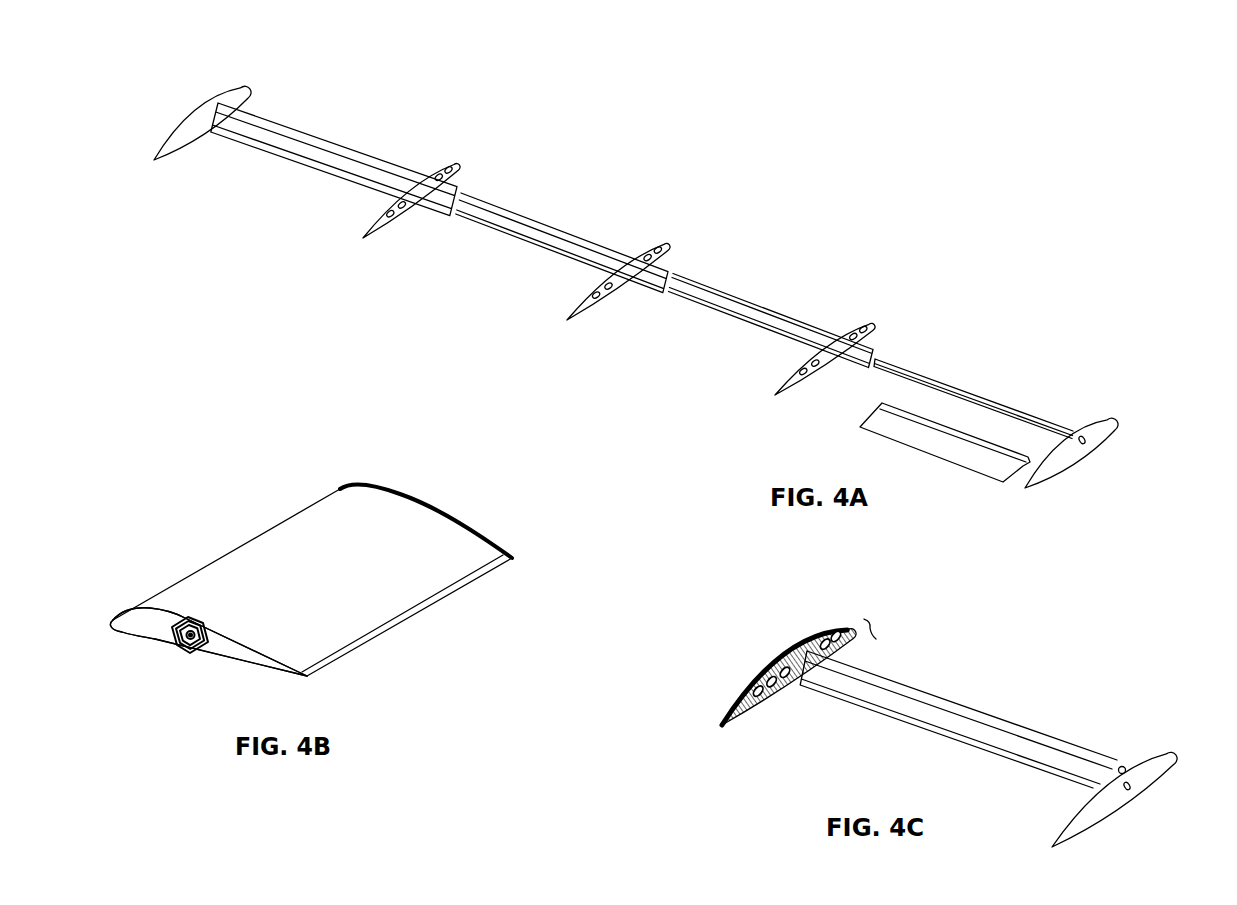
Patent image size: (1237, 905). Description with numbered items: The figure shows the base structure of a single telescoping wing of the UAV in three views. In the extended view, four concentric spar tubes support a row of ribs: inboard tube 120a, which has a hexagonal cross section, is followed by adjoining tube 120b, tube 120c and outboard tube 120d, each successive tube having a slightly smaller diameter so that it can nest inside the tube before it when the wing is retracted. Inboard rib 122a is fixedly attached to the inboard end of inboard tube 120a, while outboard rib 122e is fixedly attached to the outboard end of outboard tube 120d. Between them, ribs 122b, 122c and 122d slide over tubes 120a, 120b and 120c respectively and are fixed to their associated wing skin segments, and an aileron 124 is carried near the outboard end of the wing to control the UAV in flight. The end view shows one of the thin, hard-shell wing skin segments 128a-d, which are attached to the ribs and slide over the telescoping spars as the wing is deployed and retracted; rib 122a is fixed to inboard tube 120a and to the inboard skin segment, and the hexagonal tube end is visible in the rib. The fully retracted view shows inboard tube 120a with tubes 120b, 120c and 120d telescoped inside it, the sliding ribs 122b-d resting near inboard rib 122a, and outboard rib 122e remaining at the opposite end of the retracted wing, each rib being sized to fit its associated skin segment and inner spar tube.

In FIG. 4A, the inboard tube 120a is at (358, 160).
In FIG. 4C, the inboard tube 120a is at (968, 722).
In FIG. 4A, the adjoining tube 120b is at (563, 246).
In FIG. 4C, the adjoining tube 120b is at (1122, 767).
In FIG. 4A, the tube 120c is at (773, 322).
In FIG. 4A, the outboard tube 120d is at (985, 400).
In FIG. 4A, the inboard rib 122a is at (237, 86).
In FIG. 4B, the inboard rib 122a is at (155, 638).
In FIG. 4C, the inboard rib 122a is at (792, 676).
In FIG. 4A, the rib 122b is at (447, 166).
In FIG. 4A, the rib 122c is at (650, 250).
In FIG. 4A, the rib 122d is at (860, 326).
In FIG. 4A, the outboard rib 122e is at (1102, 420).
In FIG. 4B, the outboard rib 122e is at (474, 528).
In FIG. 4C, the outboard rib 122e is at (1114, 796).
In FIG. 4C, the ribs 122b-d is at (868, 620).
In FIG. 4A, the aileron 124 is at (938, 450).
In FIG. 4B, the wing skin segments 128a-d is at (289, 574).